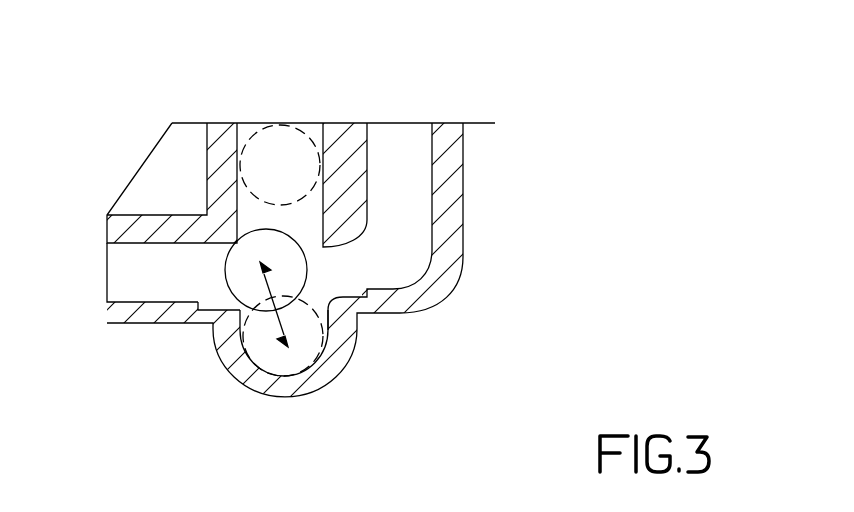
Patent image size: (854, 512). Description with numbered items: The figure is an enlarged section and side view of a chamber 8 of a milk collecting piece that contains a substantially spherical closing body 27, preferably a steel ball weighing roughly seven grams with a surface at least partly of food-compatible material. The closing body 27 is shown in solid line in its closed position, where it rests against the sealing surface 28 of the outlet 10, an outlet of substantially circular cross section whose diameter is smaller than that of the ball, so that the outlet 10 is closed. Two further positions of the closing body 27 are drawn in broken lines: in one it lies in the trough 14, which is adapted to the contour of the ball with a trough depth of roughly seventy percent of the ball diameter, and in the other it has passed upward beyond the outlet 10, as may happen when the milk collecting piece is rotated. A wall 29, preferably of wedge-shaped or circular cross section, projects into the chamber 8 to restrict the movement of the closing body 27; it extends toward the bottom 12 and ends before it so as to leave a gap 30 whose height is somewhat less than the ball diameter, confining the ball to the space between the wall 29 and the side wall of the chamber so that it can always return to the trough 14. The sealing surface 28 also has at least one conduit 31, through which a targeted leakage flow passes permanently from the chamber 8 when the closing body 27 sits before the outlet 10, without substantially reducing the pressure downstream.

The chamber 8 is at (388, 303).
The outlet 10 is at (190, 280).
The bottom 12 is at (447, 202).
The trough 14 is at (297, 385).
The closing body 27 is at (283, 253).
The sealing surface 28 is at (207, 215).
The wall 29 is at (343, 140).
The gap 30 is at (330, 272).
The conduit 31 is at (210, 315).